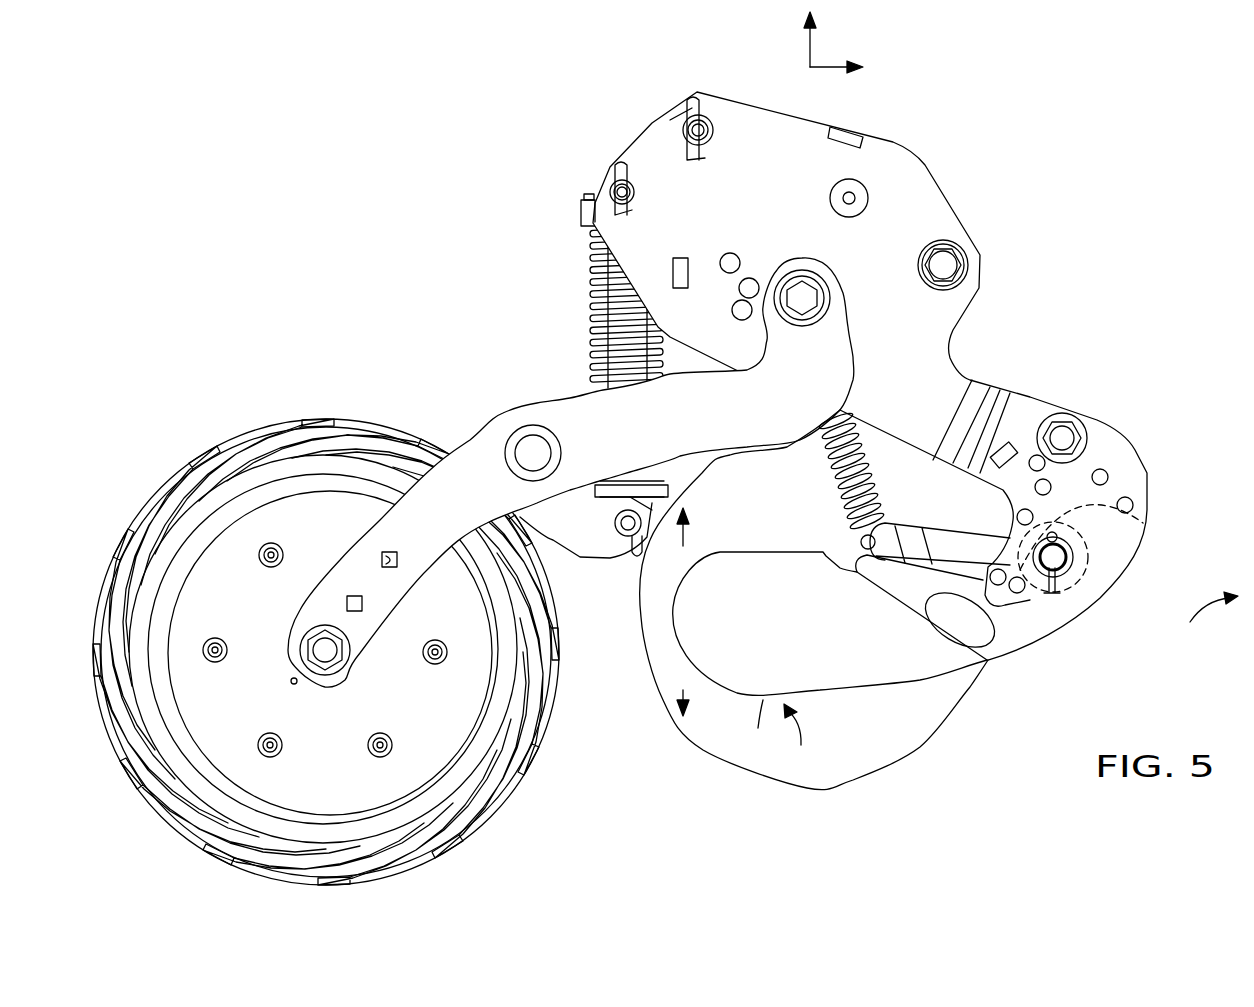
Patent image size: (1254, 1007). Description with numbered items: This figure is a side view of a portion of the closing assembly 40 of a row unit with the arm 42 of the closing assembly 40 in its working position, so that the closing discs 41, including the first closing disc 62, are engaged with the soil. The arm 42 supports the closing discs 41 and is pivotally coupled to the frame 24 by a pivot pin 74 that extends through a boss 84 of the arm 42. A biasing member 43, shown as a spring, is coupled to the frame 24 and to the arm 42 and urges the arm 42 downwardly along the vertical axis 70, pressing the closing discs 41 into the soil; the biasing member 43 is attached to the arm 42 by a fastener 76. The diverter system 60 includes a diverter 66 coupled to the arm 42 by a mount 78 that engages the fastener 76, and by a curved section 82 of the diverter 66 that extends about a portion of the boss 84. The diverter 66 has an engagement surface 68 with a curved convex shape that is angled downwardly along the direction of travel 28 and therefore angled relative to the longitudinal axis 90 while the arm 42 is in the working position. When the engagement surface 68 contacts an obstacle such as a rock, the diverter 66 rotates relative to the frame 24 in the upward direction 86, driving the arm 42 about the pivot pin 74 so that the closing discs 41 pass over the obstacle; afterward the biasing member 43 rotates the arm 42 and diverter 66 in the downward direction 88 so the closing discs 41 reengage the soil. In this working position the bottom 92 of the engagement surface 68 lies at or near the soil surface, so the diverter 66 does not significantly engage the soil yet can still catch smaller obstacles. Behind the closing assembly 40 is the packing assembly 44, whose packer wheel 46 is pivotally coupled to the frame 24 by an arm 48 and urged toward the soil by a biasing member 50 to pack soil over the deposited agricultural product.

The frame 24 is at (908, 186).
The direction of travel 28 is at (1209, 625).
The closing assembly 40 is at (992, 690).
The closing disc 41 is at (856, 781).
The arm 42 is at (947, 530).
The biasing member 43 is at (828, 460).
The packing assembly 44 is at (403, 408).
The packer wheel 46 is at (175, 470).
The arm 48 is at (550, 412).
The biasing member 50 is at (582, 288).
The diverter system 60 is at (801, 743).
The first closing disc 62 is at (814, 612).
The diverter 66 is at (830, 653).
The engagement surface 68 is at (822, 680).
The vertical axis 70 is at (810, 45).
The pivot pin 74 is at (1062, 560).
The fastener 76 is at (865, 540).
The mount 78 is at (888, 570).
The curved section 82 is at (1105, 565).
The boss 84 is at (1113, 528).
The upward direction 86 is at (683, 532).
The downward direction 88 is at (683, 700).
The longitudinal axis 90 is at (830, 68).
The bottom 92 is at (754, 731).